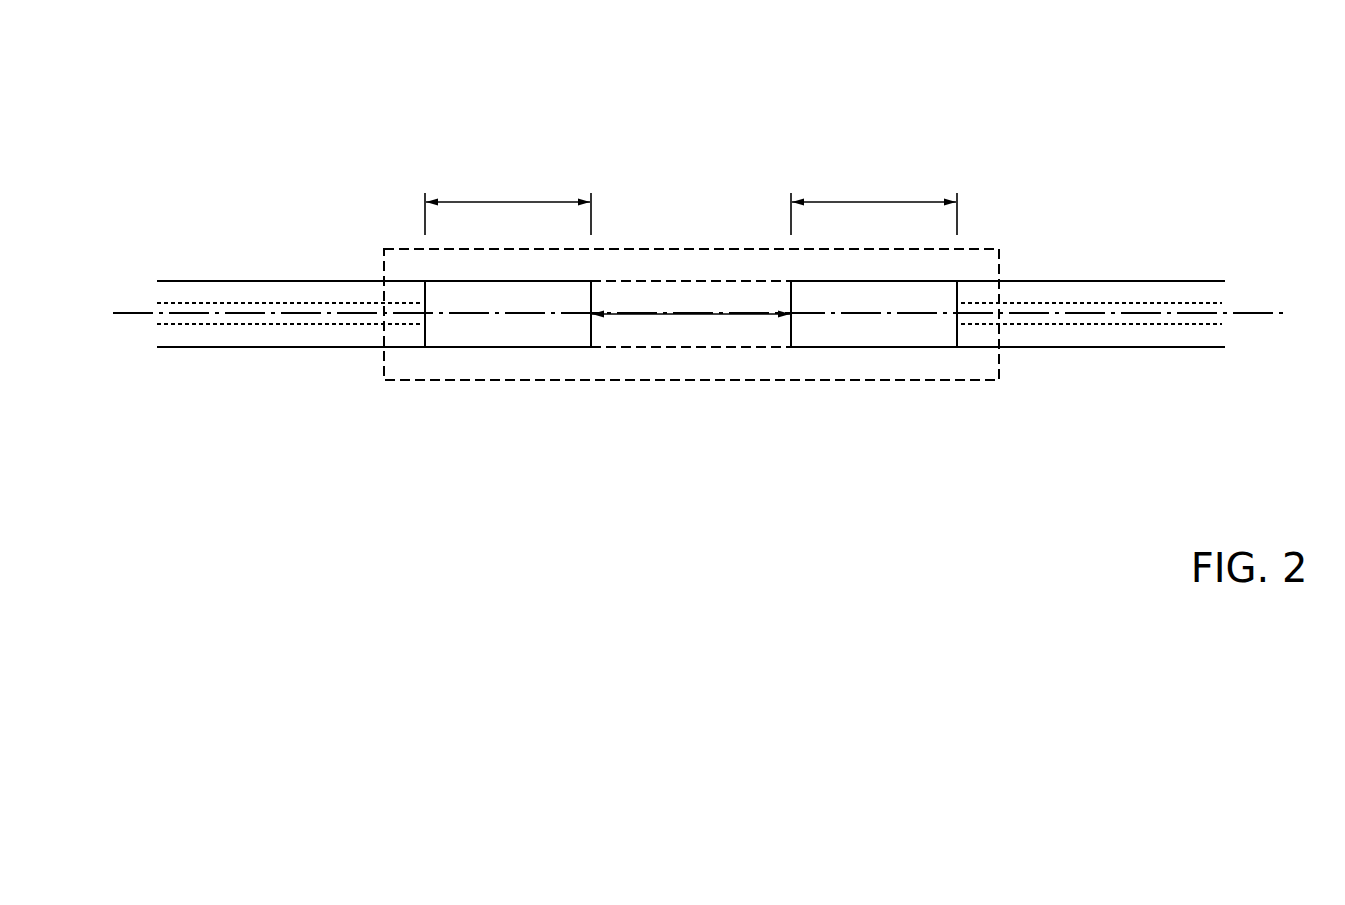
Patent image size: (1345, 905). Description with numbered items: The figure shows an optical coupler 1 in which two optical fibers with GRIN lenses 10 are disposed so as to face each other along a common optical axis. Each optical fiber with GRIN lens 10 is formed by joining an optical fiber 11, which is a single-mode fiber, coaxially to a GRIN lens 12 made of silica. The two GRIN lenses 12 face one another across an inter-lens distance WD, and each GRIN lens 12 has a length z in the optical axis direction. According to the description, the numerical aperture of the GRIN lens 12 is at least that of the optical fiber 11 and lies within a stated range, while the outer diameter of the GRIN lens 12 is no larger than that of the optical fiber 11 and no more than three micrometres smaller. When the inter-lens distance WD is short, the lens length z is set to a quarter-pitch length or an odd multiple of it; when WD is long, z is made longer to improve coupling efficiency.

The optical coupler 1 is at (943, 112).
The optical fiber with GRIN lens 10 is at (359, 218).
The optical fiber 11 is at (281, 348).
The GRIN lens 12 is at (522, 348).